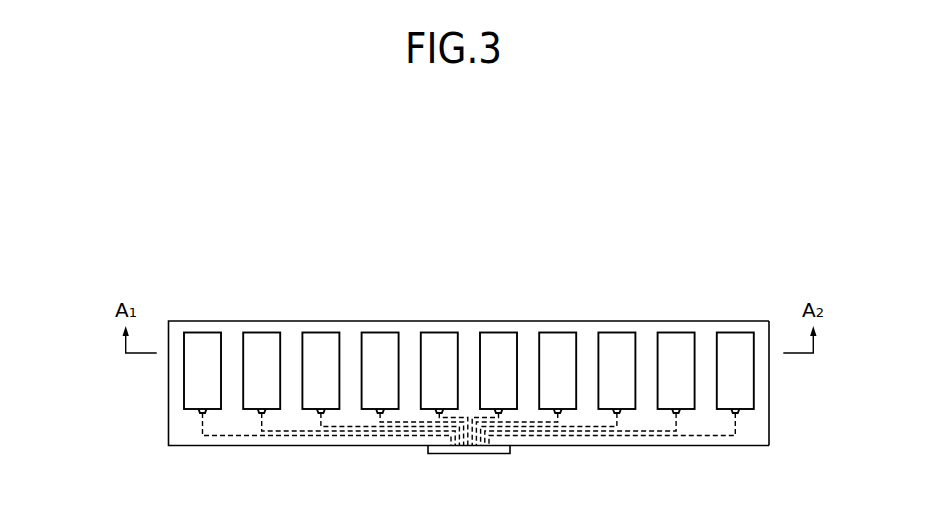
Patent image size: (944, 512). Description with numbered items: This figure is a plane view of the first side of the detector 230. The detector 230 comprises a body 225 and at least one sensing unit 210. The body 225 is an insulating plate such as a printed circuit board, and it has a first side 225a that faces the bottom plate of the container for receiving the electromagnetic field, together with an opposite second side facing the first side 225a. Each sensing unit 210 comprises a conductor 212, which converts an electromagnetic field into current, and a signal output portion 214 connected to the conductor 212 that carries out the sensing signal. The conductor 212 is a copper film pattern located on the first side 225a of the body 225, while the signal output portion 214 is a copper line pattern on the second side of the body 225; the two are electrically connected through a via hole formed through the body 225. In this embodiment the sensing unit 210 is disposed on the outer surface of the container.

The sensing unit 210 is at (108, 382).
The conductor 212 is at (195, 385).
The signal output portion 214 is at (205, 423).
The body 225 is at (505, 313).
The first side 225a is at (766, 414).
The detector 230 is at (684, 290).